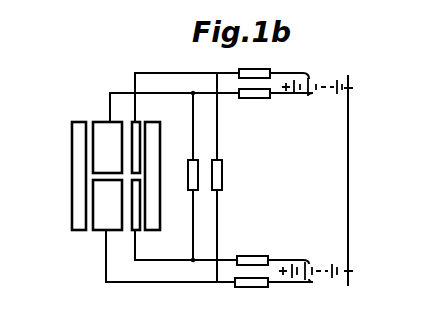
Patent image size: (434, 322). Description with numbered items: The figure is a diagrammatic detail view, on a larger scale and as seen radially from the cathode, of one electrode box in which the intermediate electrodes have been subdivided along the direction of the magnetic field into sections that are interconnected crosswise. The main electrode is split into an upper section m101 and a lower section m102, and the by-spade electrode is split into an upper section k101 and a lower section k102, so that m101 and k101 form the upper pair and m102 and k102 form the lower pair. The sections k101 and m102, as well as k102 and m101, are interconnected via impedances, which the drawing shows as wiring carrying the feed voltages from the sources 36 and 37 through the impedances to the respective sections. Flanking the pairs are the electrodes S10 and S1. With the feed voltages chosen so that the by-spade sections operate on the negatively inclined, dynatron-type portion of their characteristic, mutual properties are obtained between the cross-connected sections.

The upper main electrode section m101 is at (93, 121).
The lower main electrode section m102 is at (96, 231).
The upper by-spade electrode section k101 is at (134, 121).
The lower by-spade electrode section k102 is at (134, 231).
The shield electrode S10 is at (74, 170).
The shield electrode S1 is at (153, 178).
The voltage source 36 is at (317, 102).
The voltage source 37 is at (316, 288).